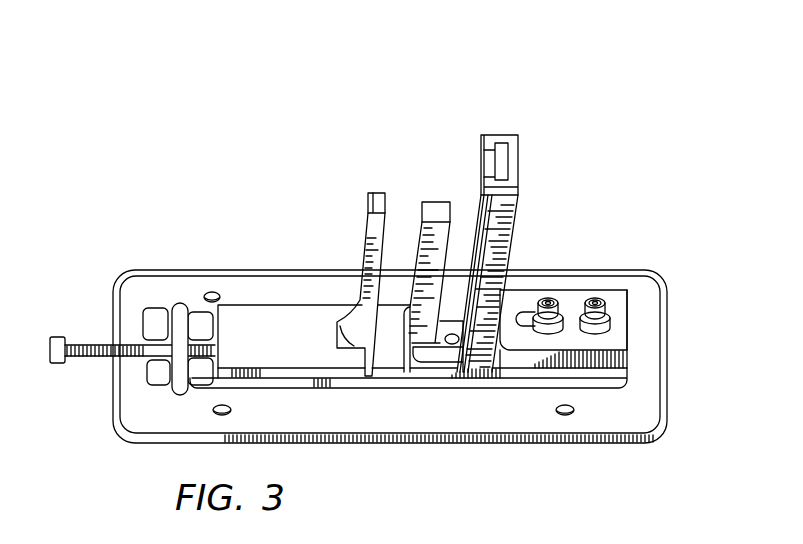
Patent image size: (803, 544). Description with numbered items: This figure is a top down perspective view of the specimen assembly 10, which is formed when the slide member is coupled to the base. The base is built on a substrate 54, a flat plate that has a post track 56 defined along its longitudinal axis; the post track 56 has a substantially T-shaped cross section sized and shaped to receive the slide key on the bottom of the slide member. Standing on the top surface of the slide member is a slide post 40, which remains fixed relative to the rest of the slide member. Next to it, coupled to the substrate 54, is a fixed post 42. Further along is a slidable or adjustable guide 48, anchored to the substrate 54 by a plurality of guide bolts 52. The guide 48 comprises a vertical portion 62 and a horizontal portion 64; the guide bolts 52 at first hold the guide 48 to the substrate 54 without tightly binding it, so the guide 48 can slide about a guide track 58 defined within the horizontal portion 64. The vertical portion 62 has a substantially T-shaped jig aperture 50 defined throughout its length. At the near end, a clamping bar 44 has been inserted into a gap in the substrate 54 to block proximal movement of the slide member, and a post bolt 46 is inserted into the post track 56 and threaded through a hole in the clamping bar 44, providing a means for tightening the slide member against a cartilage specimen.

The specimen assembly 10 is at (118, 104).
The slide post 40 is at (370, 222).
The fixed post 42 is at (448, 208).
The clamping bar 44 is at (175, 313).
The post bolt 46 is at (88, 342).
The guide 48 is at (503, 140).
The jig aperture 50 is at (522, 111).
The guide bolts 52 is at (597, 303).
The substrate 54 is at (430, 420).
The post track 56 is at (200, 340).
The guide track 58 is at (522, 318).
The vertical portion 62 is at (497, 250).
The horizontal portion 64 is at (617, 345).